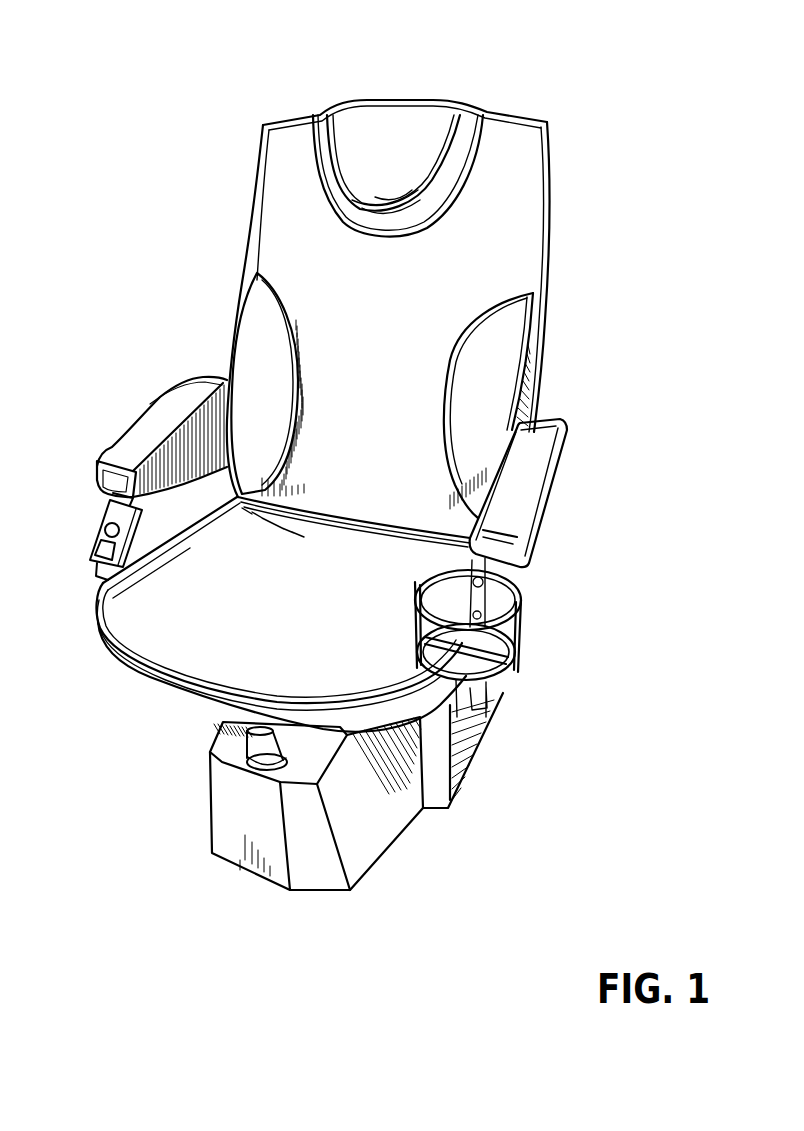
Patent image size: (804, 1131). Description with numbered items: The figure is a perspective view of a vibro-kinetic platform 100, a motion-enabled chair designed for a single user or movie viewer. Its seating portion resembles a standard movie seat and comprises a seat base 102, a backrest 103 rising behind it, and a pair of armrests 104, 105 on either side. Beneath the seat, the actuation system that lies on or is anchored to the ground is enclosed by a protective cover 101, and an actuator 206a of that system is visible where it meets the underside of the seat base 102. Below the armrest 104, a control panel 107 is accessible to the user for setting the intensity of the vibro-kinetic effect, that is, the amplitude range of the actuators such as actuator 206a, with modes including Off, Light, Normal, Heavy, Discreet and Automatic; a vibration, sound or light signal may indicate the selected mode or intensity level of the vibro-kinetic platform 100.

The vibro-kinetic platform 100 is at (166, 52).
The protective cover 101 is at (366, 830).
The seat base 102 is at (336, 621).
The backrest 103 is at (412, 393).
The armrest 104 is at (147, 432).
The armrest 105 is at (522, 472).
The control panel 107 is at (93, 530).
The actuator 206a is at (260, 749).